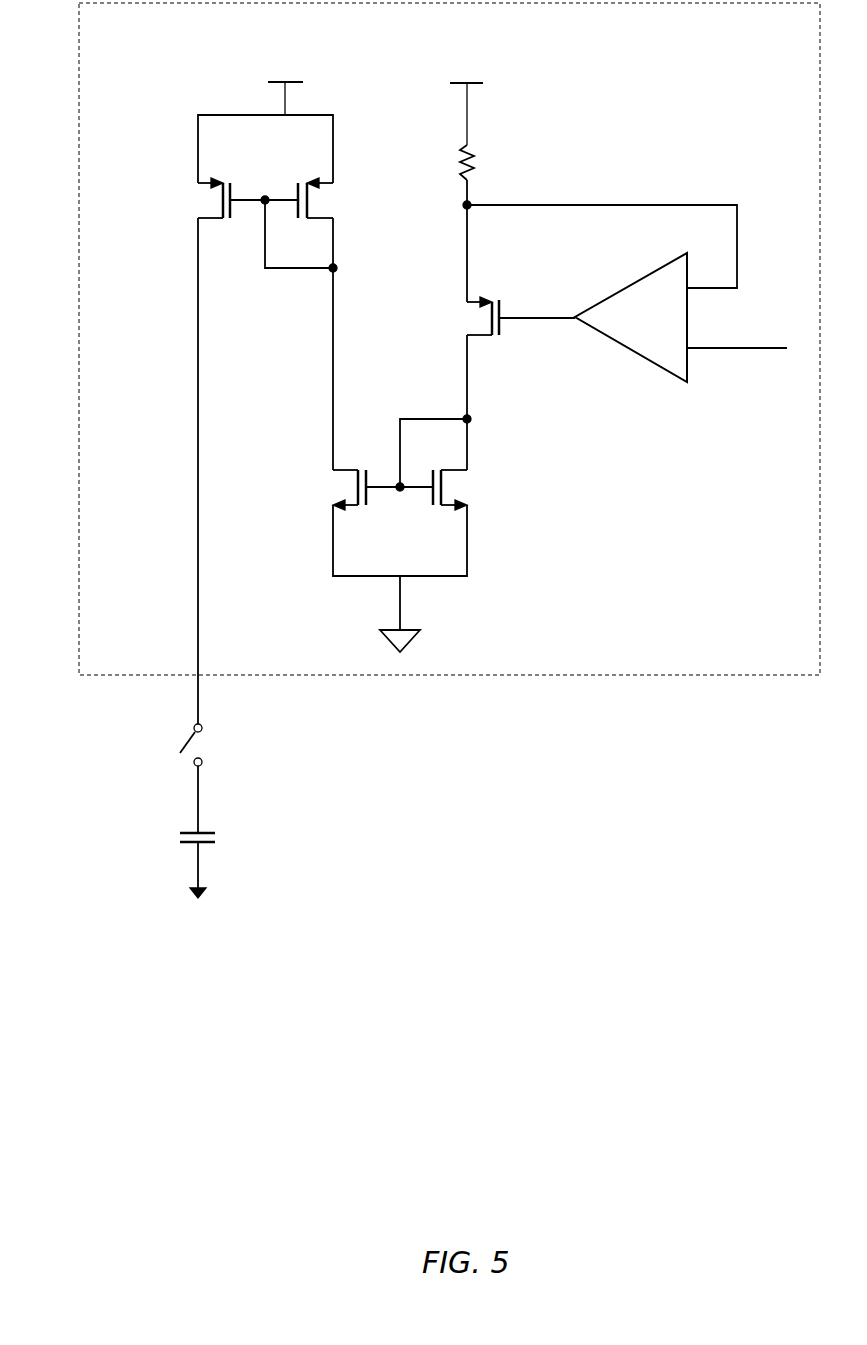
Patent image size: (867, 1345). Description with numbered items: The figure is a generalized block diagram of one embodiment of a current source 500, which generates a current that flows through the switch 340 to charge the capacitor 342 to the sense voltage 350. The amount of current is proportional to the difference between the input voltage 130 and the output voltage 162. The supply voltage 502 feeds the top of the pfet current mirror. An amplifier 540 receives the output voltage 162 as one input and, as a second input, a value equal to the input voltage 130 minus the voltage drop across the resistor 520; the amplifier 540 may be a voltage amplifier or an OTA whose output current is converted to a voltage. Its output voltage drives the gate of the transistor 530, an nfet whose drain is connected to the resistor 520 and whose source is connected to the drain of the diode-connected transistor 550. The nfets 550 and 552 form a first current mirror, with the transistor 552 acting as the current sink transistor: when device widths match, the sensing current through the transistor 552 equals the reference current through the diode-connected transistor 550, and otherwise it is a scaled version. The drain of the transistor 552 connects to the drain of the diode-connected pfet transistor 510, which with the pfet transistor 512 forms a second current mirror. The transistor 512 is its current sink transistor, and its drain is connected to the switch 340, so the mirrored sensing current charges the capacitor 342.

The current source 500 is at (449, 339).
The supply voltage VDD 502 is at (289, 86).
The input voltage VIN 130 is at (471, 101).
The resistor R1 520 is at (470, 173).
The diode-connected transistor 510 is at (333, 175).
The current sink transistor 512 is at (220, 200).
The transistor 530 is at (488, 318).
The amplifier 540 is at (633, 355).
The output voltage VOUT 162 is at (732, 348).
The diode-connected transistor 550 is at (442, 480).
The current sink transistor 552 is at (357, 480).
The switch S2 340 is at (172, 768).
The capacitor C1 342 is at (182, 843).
The sense voltage 350 is at (197, 795).